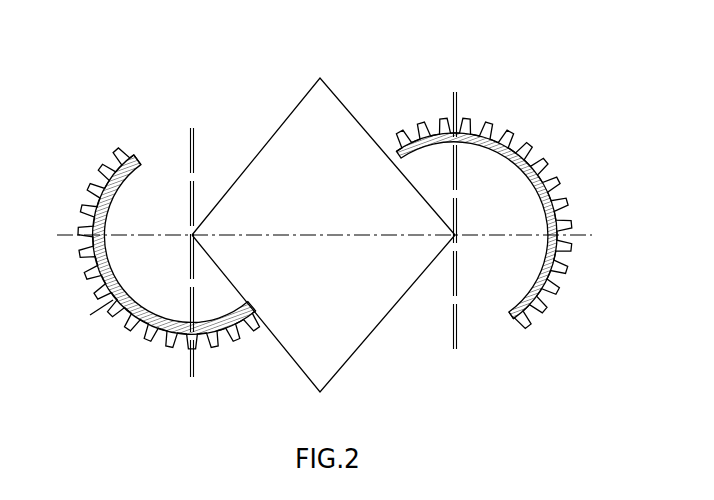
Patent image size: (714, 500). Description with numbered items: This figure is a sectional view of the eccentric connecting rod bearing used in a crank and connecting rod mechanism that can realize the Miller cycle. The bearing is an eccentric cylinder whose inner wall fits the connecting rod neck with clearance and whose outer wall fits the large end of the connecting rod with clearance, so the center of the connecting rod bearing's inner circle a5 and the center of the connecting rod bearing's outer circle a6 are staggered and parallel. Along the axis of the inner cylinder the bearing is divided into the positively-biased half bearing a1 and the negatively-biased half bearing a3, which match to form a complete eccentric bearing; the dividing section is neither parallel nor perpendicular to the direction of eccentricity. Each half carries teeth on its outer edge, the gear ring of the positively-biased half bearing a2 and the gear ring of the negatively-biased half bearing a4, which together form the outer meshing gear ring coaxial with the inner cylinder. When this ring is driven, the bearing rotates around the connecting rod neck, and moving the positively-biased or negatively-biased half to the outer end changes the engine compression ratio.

The positively-biased half bearing a1 is at (136, 285).
The gear ring of positively-biased half bearing a2 is at (101, 82).
The negatively-biased half bearing a3 is at (483, 164).
The gear ring of negatively-biased half bearing a4 is at (579, 364).
The center of connecting rod bearing's inner circle a5 is at (428, 392).
The center of connecting rod bearing's outer circle a6 is at (320, 78).